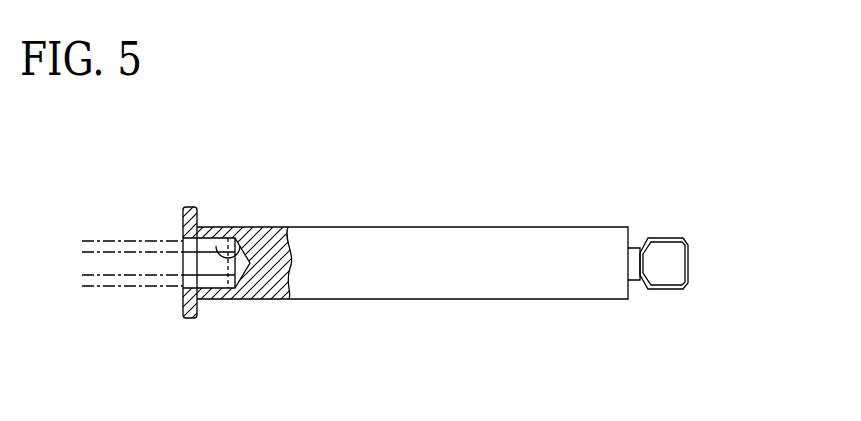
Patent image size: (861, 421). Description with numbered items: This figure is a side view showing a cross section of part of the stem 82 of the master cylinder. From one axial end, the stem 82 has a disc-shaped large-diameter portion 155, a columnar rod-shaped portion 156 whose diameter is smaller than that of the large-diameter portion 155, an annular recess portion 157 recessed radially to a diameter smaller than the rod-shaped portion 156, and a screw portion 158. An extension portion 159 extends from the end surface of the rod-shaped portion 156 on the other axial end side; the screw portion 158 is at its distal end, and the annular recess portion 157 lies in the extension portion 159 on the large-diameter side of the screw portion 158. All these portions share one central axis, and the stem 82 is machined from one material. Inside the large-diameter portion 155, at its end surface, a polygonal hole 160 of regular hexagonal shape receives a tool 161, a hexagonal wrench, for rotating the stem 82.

The stem 82 is at (464, 221).
The large-diameter portion 155 is at (187, 320).
The rod-shaped portion 156 is at (363, 300).
The annular recess portion 157 is at (639, 247).
The screw portion 158 is at (663, 291).
The extension portion 159 is at (675, 233).
The polygonal hole 160 is at (247, 257).
The tool 161 is at (127, 240).